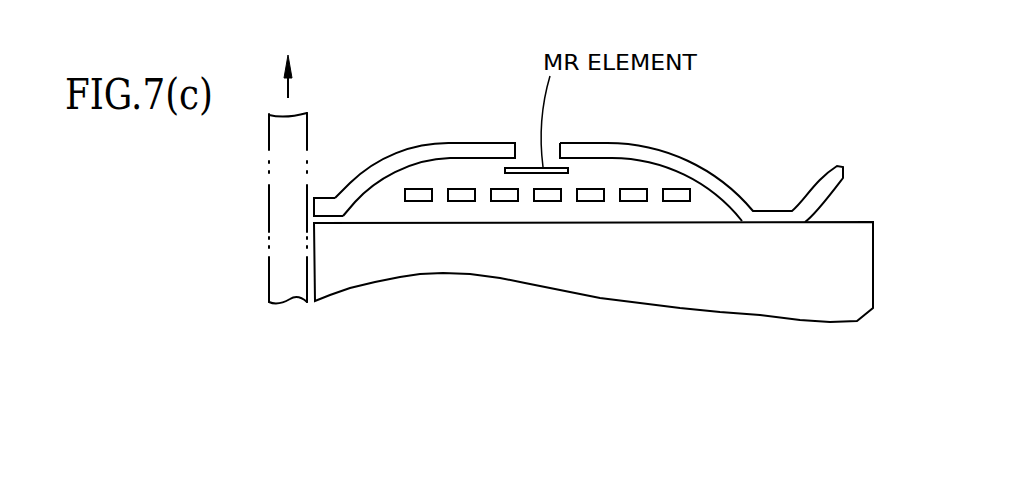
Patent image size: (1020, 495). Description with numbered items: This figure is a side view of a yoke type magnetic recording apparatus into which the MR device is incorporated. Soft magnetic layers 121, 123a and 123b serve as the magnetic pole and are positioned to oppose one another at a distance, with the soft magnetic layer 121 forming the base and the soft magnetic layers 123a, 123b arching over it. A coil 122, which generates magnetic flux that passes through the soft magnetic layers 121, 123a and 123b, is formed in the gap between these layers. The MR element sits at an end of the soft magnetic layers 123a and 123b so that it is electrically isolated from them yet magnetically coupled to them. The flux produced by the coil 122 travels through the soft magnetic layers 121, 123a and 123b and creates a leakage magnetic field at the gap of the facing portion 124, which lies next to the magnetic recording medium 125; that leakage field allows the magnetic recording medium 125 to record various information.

The soft magnetic layer 121 is at (658, 265).
The coil 122 is at (461, 201).
The soft magnetic layer 123a is at (453, 150).
The soft magnetic layer 123b is at (687, 152).
The facing portion 124 is at (332, 187).
The magnetic recording medium 125 is at (292, 303).